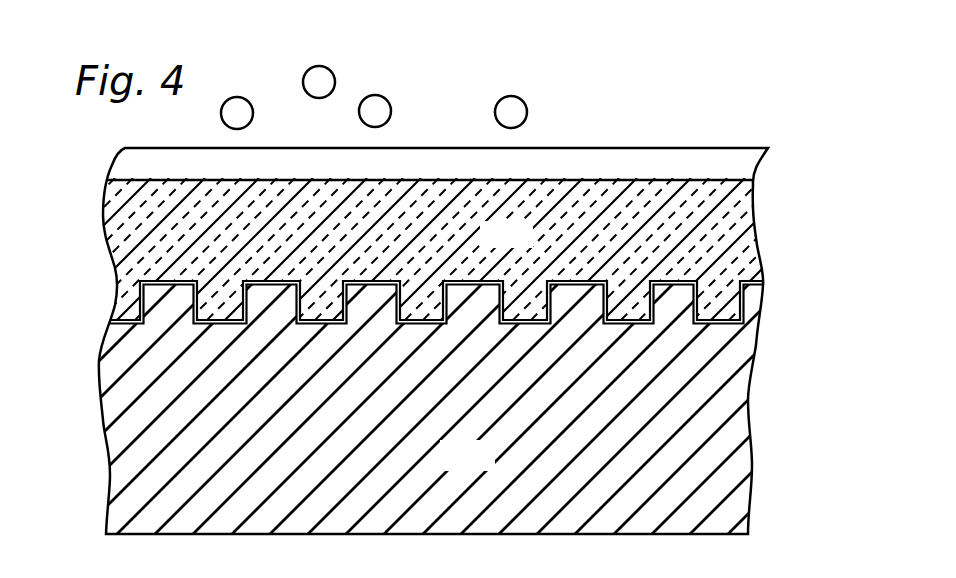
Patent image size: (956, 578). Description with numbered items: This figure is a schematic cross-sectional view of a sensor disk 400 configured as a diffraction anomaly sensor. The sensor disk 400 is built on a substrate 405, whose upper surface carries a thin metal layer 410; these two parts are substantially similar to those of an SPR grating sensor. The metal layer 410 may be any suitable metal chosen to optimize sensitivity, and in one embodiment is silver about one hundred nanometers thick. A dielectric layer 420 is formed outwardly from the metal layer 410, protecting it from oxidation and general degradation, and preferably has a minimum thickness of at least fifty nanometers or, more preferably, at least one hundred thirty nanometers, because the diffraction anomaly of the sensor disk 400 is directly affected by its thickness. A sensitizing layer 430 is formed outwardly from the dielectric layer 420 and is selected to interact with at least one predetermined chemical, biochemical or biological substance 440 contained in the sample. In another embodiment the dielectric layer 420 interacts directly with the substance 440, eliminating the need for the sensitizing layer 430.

The sensor disk 400 is at (678, 82).
The substrate 405 is at (488, 467).
The metal layer 410 is at (127, 317).
The dielectric layer 420 is at (527, 244).
The sensitizing layer 430 is at (752, 167).
The substance 440 is at (334, 71).